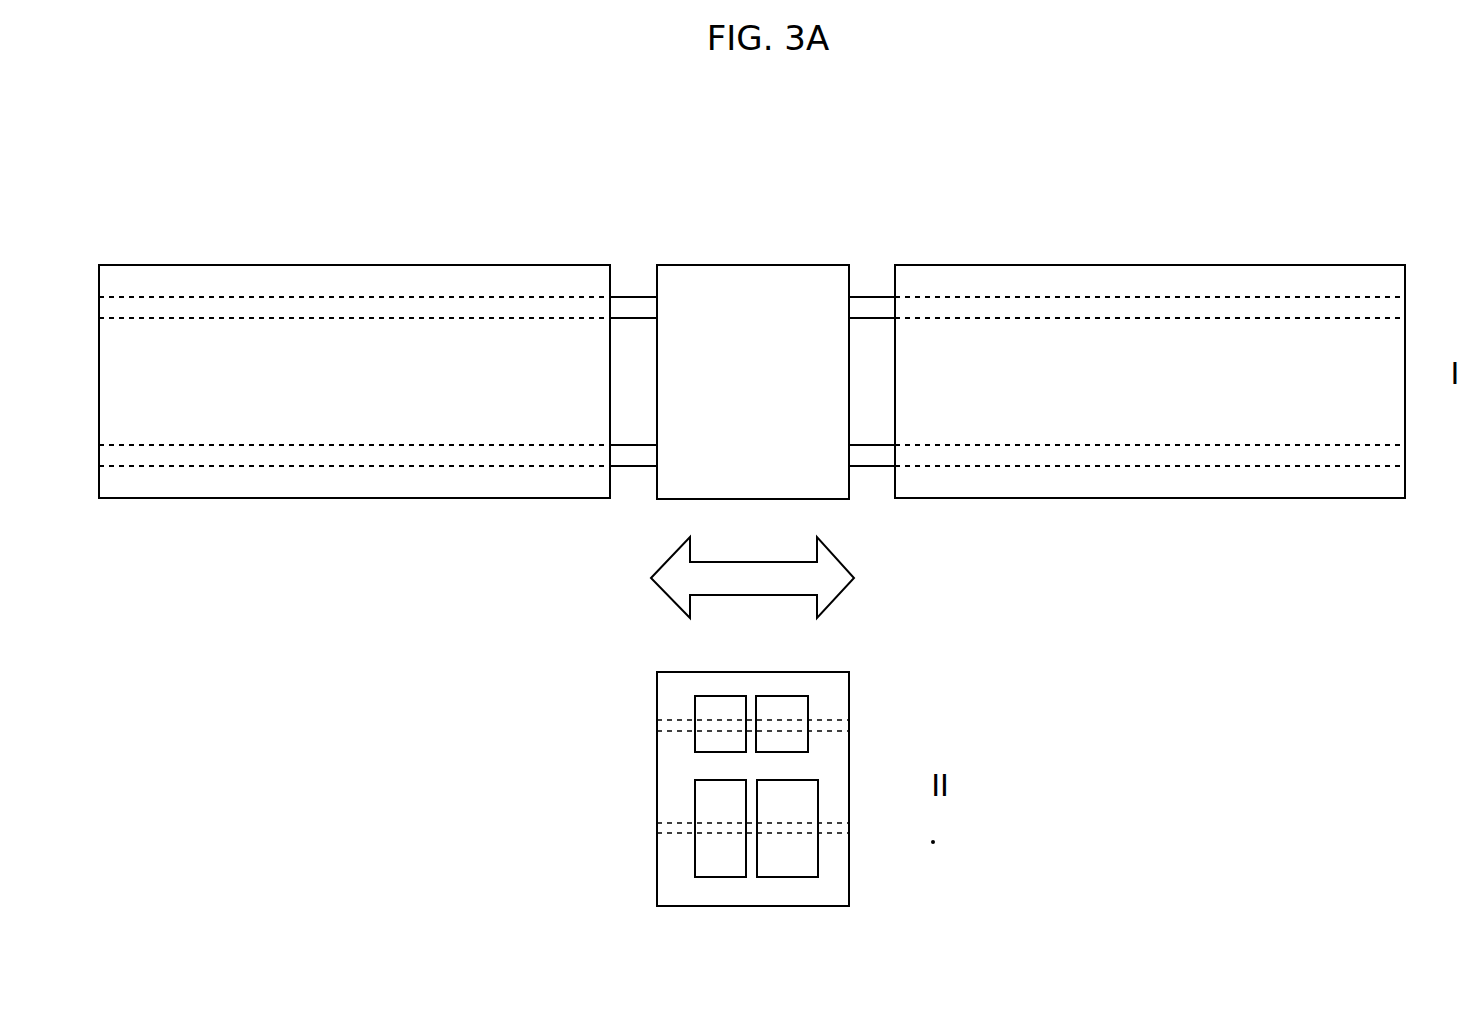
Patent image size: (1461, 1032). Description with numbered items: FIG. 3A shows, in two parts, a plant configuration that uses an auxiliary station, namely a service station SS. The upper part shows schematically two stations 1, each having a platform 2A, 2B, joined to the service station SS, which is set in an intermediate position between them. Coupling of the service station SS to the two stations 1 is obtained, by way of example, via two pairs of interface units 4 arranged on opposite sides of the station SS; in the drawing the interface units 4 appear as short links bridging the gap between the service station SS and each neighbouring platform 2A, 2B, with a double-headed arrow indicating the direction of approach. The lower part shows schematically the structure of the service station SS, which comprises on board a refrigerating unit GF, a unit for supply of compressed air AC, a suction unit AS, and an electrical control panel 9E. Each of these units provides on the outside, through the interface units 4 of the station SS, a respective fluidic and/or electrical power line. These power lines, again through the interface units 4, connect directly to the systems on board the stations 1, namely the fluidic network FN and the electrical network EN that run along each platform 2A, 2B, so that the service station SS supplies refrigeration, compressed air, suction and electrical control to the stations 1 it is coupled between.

The station 1 is at (349, 248).
The platform 2A is at (354, 381).
The platform 2B is at (1150, 381).
The interface unit 4 is at (631, 299).
The electrical network EN is at (478, 298).
The fluidic network FN is at (353, 467).
The service station SS is at (636, 782).
The refrigerating unit GF is at (707, 709).
The unit for supply of compressed air AC is at (800, 704).
The suction unit AS is at (710, 852).
The electrical control panel 9E is at (798, 858).